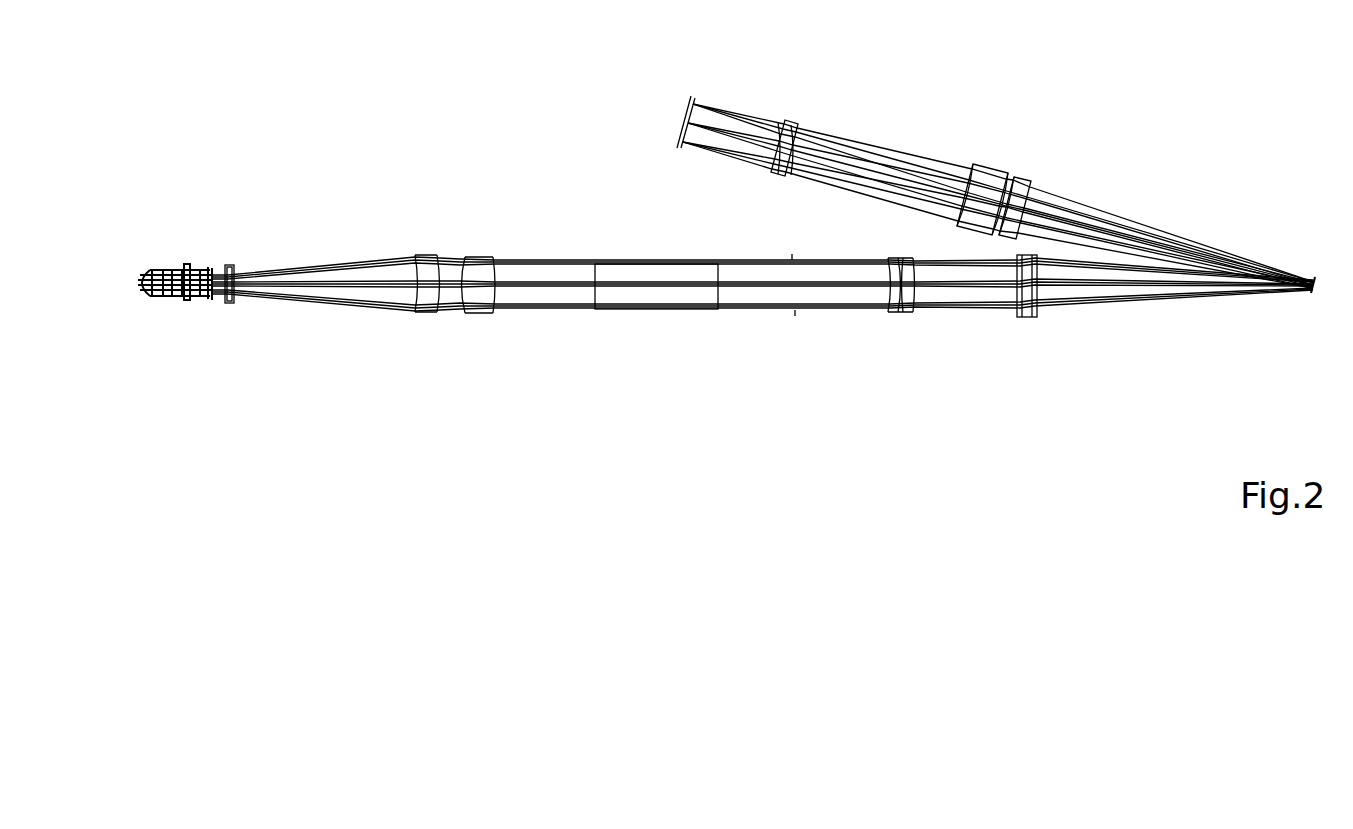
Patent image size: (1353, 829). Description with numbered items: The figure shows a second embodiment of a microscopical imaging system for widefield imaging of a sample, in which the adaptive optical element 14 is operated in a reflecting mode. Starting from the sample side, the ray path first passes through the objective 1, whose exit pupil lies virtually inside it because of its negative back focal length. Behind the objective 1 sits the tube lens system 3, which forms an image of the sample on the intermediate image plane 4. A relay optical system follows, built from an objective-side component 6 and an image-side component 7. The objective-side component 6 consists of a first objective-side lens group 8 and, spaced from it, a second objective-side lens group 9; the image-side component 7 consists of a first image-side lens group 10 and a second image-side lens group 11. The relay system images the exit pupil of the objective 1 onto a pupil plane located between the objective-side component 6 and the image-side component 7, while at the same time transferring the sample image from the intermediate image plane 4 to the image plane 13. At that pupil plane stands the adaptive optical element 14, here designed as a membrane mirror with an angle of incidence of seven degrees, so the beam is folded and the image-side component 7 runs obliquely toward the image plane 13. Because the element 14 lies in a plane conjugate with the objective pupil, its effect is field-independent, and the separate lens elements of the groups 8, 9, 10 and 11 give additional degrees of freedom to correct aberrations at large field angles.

The objective 1 is at (133, 338).
The tube lens system 3 is at (220, 337).
The intermediate image plane 4 is at (792, 316).
The objective-side component 6 is at (962, 354).
The image-side component 7 is at (986, 159).
The first objective-side lens group 8 is at (899, 320).
The second objective-side lens group 9 is at (1024, 320).
The first image-side lens group 10 is at (1000, 175).
The second image-side lens group 11 is at (794, 120).
The image plane 13 is at (690, 110).
The adaptive optical element 14 is at (1314, 276).